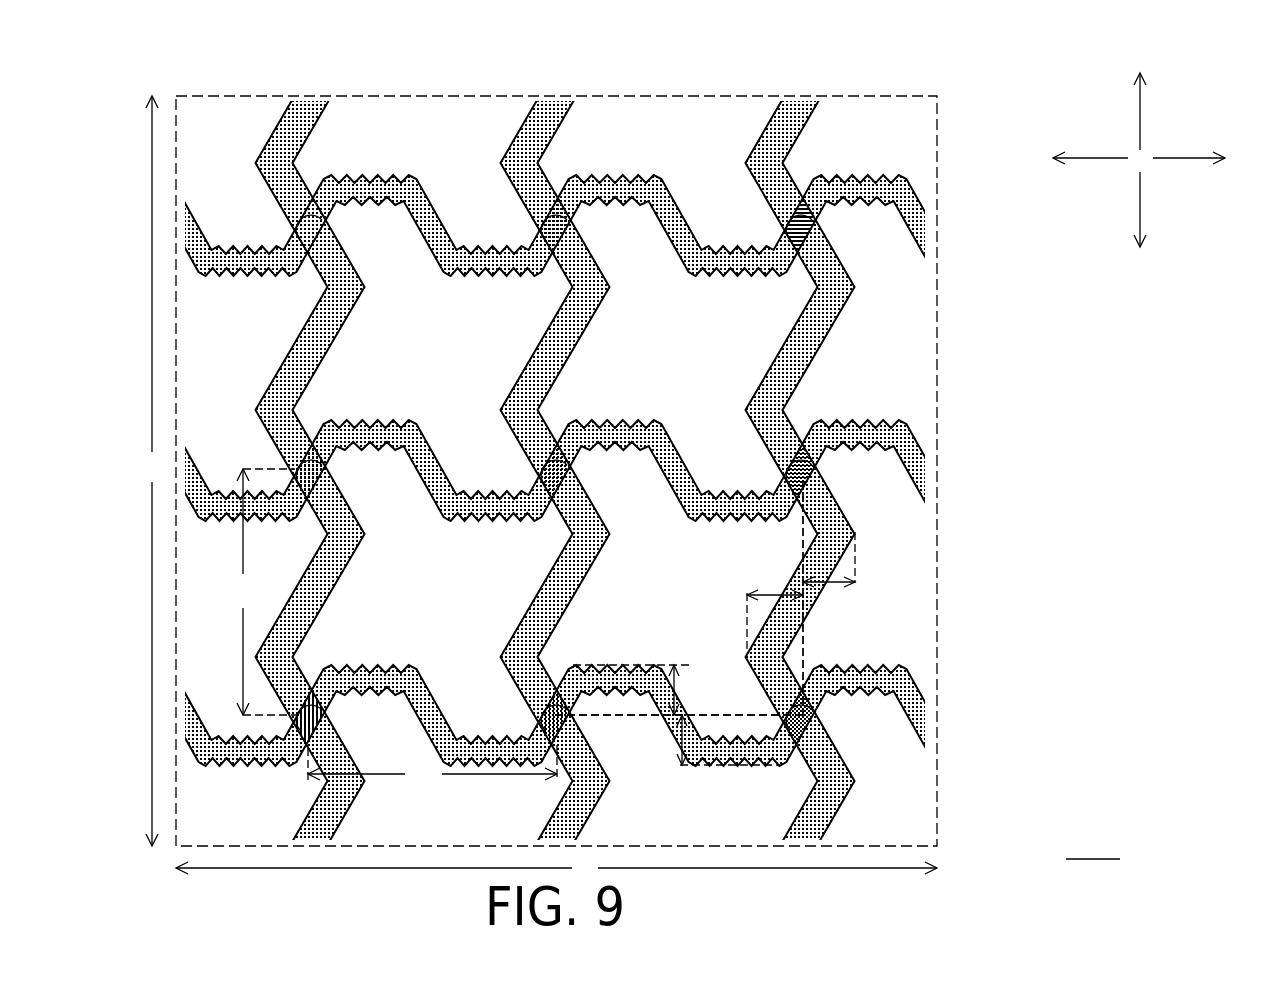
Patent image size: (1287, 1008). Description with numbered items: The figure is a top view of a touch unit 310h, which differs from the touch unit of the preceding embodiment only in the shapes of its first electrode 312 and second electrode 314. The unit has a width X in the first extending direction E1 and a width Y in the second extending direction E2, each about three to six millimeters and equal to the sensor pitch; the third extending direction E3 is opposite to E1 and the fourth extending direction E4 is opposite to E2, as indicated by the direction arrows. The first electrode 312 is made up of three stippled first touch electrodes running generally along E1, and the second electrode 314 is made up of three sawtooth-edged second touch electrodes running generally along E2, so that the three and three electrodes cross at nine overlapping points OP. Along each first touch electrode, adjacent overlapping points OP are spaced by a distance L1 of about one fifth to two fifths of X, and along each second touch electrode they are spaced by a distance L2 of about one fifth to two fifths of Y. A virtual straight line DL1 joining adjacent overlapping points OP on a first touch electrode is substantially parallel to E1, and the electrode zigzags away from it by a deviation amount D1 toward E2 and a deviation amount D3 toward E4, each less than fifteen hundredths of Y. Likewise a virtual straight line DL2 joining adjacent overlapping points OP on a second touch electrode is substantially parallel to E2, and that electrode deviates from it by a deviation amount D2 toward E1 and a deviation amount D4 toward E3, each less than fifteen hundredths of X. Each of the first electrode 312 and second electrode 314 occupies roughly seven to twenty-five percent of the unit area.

The first electrode 312 is at (555, 457).
The second electrode 314 is at (580, 470).
The overlapping point OP is at (548, 226).
The width of touch unit in first extending direction X is at (151, 471).
The width of touch unit in second extending direction Y is at (556, 870).
The distance between adjacent overlapping points on first touch electrode L1 is at (267, 592).
The distance between adjacent overlapping points on second touch electrode L2 is at (432, 769).
The deviation amount D1 is at (829, 598).
The deviation amount D2 is at (677, 690).
The deviation amount D3 is at (775, 606).
The deviation amount D4 is at (715, 740).
The virtual straight line DL1 is at (803, 645).
The virtual straight line DL2 is at (612, 717).
The first extending direction E1 is at (1141, 94).
The second extending direction E2 is at (1205, 161).
The third extending direction E3 is at (1141, 228).
The fourth extending direction E4 is at (1074, 161).
The touch unit 310h is at (1093, 843).